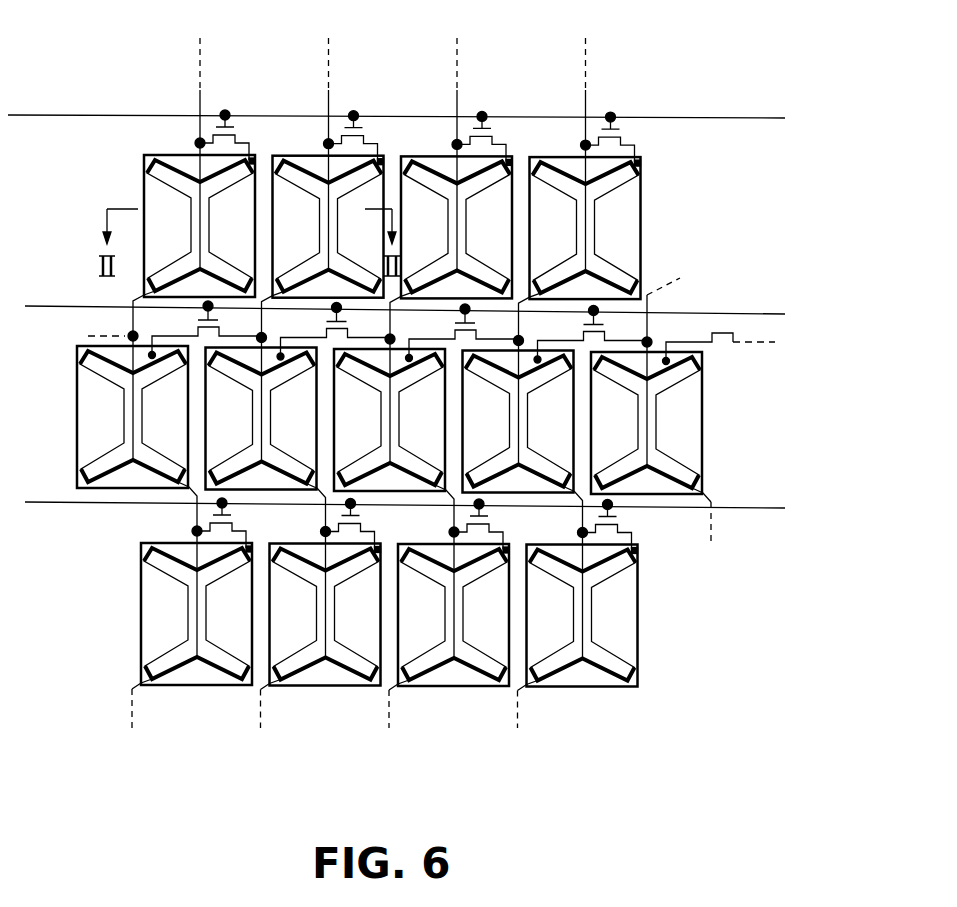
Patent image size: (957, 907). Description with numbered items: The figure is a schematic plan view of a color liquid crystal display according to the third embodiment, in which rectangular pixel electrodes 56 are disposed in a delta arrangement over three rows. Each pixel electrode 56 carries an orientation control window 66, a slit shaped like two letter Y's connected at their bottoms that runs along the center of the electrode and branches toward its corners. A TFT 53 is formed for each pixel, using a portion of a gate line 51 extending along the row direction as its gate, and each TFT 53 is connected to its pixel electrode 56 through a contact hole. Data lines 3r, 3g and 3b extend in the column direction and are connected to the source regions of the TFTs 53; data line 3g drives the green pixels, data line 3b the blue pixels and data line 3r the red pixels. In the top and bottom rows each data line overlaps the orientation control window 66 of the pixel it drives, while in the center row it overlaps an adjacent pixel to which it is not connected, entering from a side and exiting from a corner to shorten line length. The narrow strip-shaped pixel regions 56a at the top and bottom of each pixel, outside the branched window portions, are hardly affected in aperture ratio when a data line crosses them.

The data line for red pixels 3r is at (421, 365).
The data line for green pixels 3g is at (309, 365).
The data line for blue pixels 3b is at (435, 365).
The gate line 51 is at (418, 313).
The TFT 53 is at (607, 328).
The pixel electrode 56 is at (640, 257).
The pixel region 56a is at (183, 163).
The orientation control window 66 is at (610, 193).